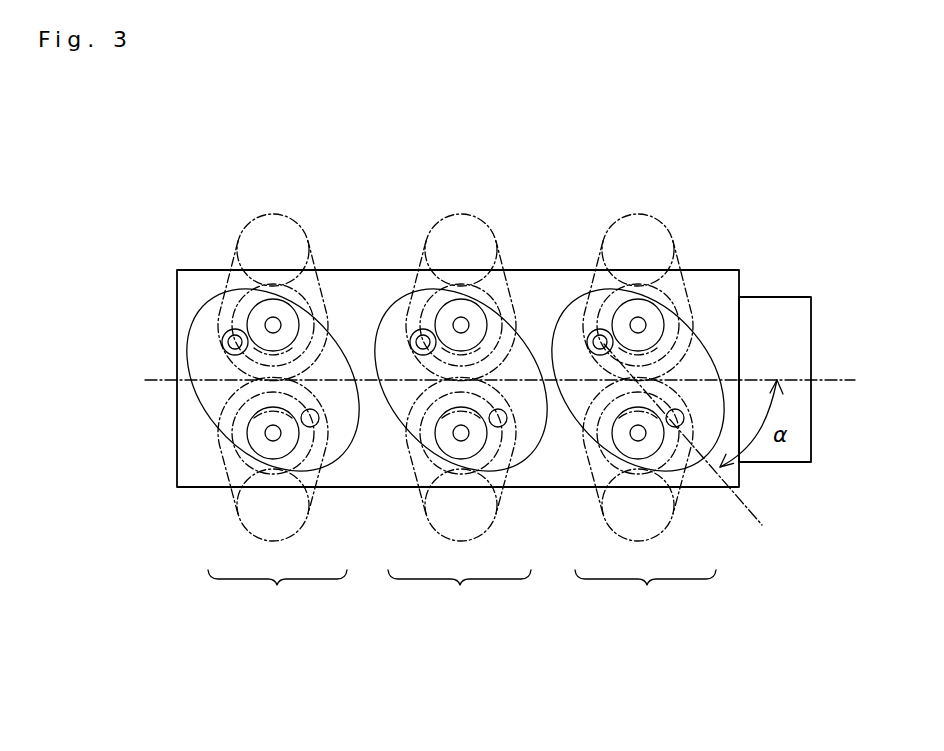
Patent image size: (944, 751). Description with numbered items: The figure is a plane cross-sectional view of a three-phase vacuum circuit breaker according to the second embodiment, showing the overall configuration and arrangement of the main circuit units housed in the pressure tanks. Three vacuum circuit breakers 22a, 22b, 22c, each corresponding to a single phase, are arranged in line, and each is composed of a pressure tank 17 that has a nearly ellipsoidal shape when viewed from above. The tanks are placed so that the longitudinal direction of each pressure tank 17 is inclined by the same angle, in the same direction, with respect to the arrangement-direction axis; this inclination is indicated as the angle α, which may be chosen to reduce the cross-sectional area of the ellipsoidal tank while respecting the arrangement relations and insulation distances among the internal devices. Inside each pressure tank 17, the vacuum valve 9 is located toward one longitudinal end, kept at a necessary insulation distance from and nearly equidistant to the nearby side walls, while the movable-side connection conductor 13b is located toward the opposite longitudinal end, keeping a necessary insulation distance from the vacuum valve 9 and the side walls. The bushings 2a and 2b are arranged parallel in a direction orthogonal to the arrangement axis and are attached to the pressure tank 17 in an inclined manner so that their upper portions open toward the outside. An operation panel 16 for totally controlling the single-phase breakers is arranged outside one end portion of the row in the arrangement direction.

The bushing 2a is at (256, 232).
The bushing 2b is at (261, 509).
The vacuum valve 9 is at (222, 343).
The movable-side connection conductor 13b is at (314, 421).
The operation panel 16 is at (782, 297).
The pressure tank 17 is at (326, 328).
The vacuum circuit breaker 22a is at (277, 432).
The vacuum circuit breaker 22b is at (459, 418).
The vacuum circuit breaker 22c is at (645, 418).